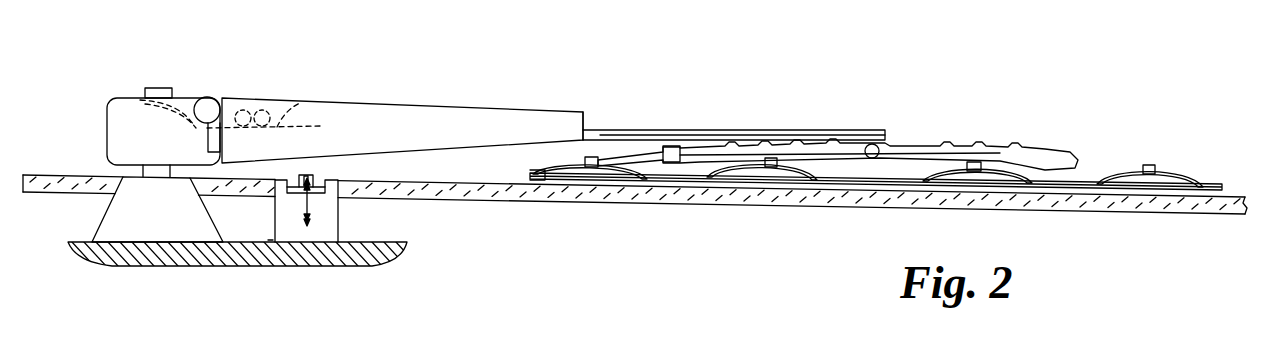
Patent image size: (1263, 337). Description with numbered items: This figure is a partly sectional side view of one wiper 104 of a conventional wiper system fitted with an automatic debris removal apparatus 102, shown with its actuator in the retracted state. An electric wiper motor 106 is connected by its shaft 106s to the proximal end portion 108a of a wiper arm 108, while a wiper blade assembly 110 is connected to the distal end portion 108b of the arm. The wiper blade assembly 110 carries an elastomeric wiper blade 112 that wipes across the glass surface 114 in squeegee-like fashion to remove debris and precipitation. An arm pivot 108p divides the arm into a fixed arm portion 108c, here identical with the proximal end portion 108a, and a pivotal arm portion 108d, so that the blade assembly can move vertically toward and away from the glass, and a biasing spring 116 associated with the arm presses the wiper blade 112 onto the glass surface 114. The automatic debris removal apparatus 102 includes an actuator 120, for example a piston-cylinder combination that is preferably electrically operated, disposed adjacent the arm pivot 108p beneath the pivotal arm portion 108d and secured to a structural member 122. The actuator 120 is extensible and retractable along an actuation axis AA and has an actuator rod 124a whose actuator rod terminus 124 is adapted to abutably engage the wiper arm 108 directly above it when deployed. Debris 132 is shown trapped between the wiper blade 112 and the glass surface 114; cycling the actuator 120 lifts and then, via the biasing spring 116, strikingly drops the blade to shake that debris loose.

The automatic debris removal apparatus 102 is at (268, 217).
The wiper 104 is at (593, 112).
The electric wiper motor 106 is at (136, 228).
The shaft 106s is at (108, 166).
The wiper arm 108 is at (370, 100).
The proximal end portion 108a is at (192, 96).
The distal end portion 108b is at (765, 129).
The fixed arm portion 108c is at (118, 95).
The pivotal arm portion 108d is at (581, 104).
The arm pivot 108p is at (208, 98).
The wiper blade assembly 110 is at (978, 130).
The wiper blade 112 is at (840, 193).
The glass surface 114 is at (912, 188).
The biasing spring 116 is at (280, 120).
The actuator 120 is at (325, 232).
The structural member 122 is at (385, 253).
The actuator rod terminus 124 is at (305, 176).
The actuator rod 124a is at (316, 178).
The debris 132 is at (700, 192).
The actuation axis AA is at (310, 194).